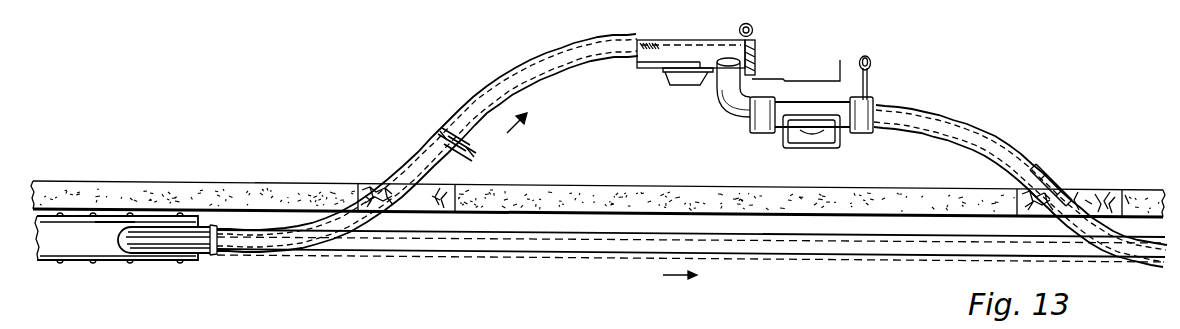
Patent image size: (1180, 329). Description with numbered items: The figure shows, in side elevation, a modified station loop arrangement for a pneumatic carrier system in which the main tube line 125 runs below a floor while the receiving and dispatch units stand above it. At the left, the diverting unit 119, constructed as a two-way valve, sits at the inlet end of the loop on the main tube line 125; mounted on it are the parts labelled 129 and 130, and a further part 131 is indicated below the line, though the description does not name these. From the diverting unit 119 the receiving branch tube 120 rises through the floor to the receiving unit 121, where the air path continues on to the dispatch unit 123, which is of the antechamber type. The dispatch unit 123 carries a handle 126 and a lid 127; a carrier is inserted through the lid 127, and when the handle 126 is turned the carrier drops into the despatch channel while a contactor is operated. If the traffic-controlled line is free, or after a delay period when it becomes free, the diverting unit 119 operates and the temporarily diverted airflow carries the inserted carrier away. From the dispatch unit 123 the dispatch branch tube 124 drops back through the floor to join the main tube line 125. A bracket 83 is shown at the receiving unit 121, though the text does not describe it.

The mounting bracket 83 is at (756, 56).
The diverting unit 119 is at (97, 245).
The receiving branch tube 120 is at (517, 83).
The receiving unit 121 is at (660, 62).
The dispatch unit 123 is at (863, 110).
The dispatch branch tube 124 is at (1013, 152).
The main tube line 125 is at (787, 247).
The handle 126 is at (870, 60).
The lid 127 is at (827, 135).
The pipe clamp 129 is at (113, 221).
The inner tube 130 is at (117, 258).
The conduit 131 is at (447, 328).